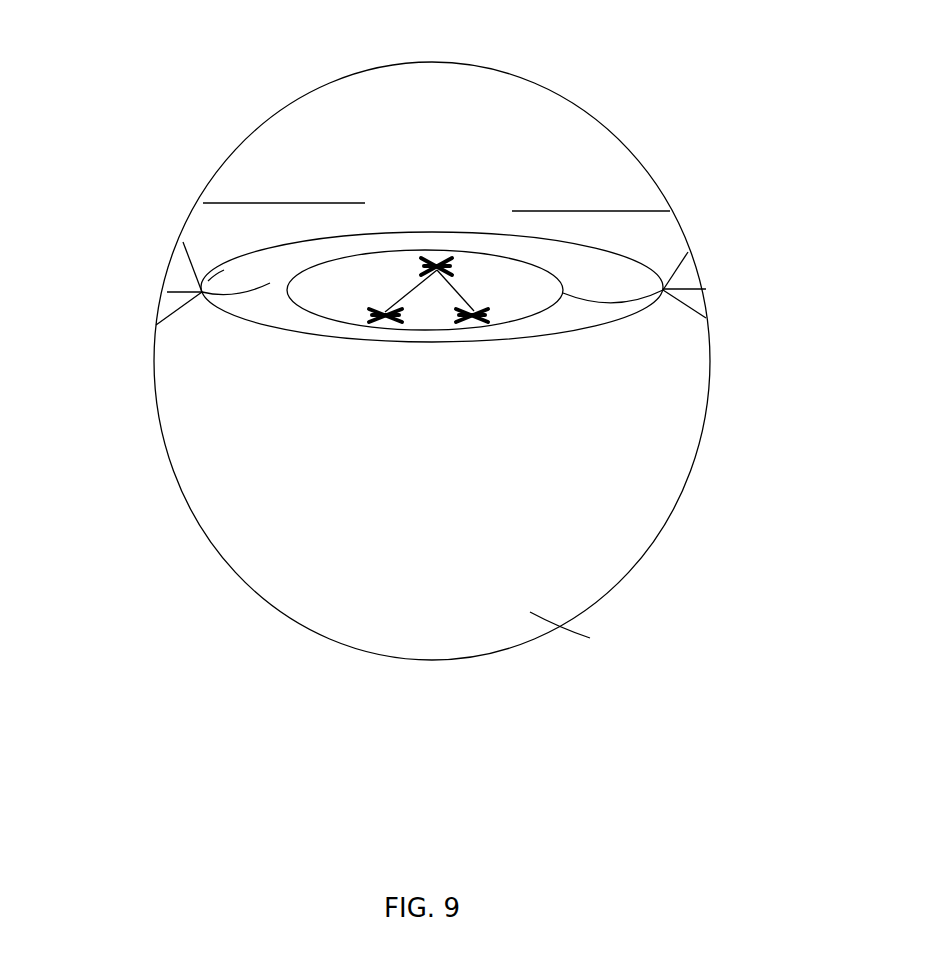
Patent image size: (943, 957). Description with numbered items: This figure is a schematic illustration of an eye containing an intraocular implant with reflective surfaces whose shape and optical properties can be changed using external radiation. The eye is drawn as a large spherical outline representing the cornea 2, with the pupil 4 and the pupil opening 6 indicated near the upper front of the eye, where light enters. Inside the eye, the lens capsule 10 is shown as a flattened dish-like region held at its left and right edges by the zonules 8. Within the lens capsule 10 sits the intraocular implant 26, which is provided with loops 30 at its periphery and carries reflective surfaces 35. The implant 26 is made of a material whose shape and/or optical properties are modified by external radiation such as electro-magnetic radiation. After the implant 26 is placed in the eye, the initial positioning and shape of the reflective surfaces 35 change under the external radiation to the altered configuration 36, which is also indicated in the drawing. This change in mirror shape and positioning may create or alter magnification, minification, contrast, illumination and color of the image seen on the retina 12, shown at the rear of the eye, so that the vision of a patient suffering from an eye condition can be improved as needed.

The cornea 2 is at (340, 78).
The pupil 4 is at (270, 197).
The pupil opening 6 is at (495, 216).
The zonules 8 is at (665, 288).
The lens capsule 10 is at (258, 327).
The retina 12 is at (560, 627).
The intraocular implant 26 is at (322, 300).
The loops 30 is at (270, 283).
The reflective surfaces 35 is at (445, 263).
The changed reflective surfaces 36 is at (440, 262).